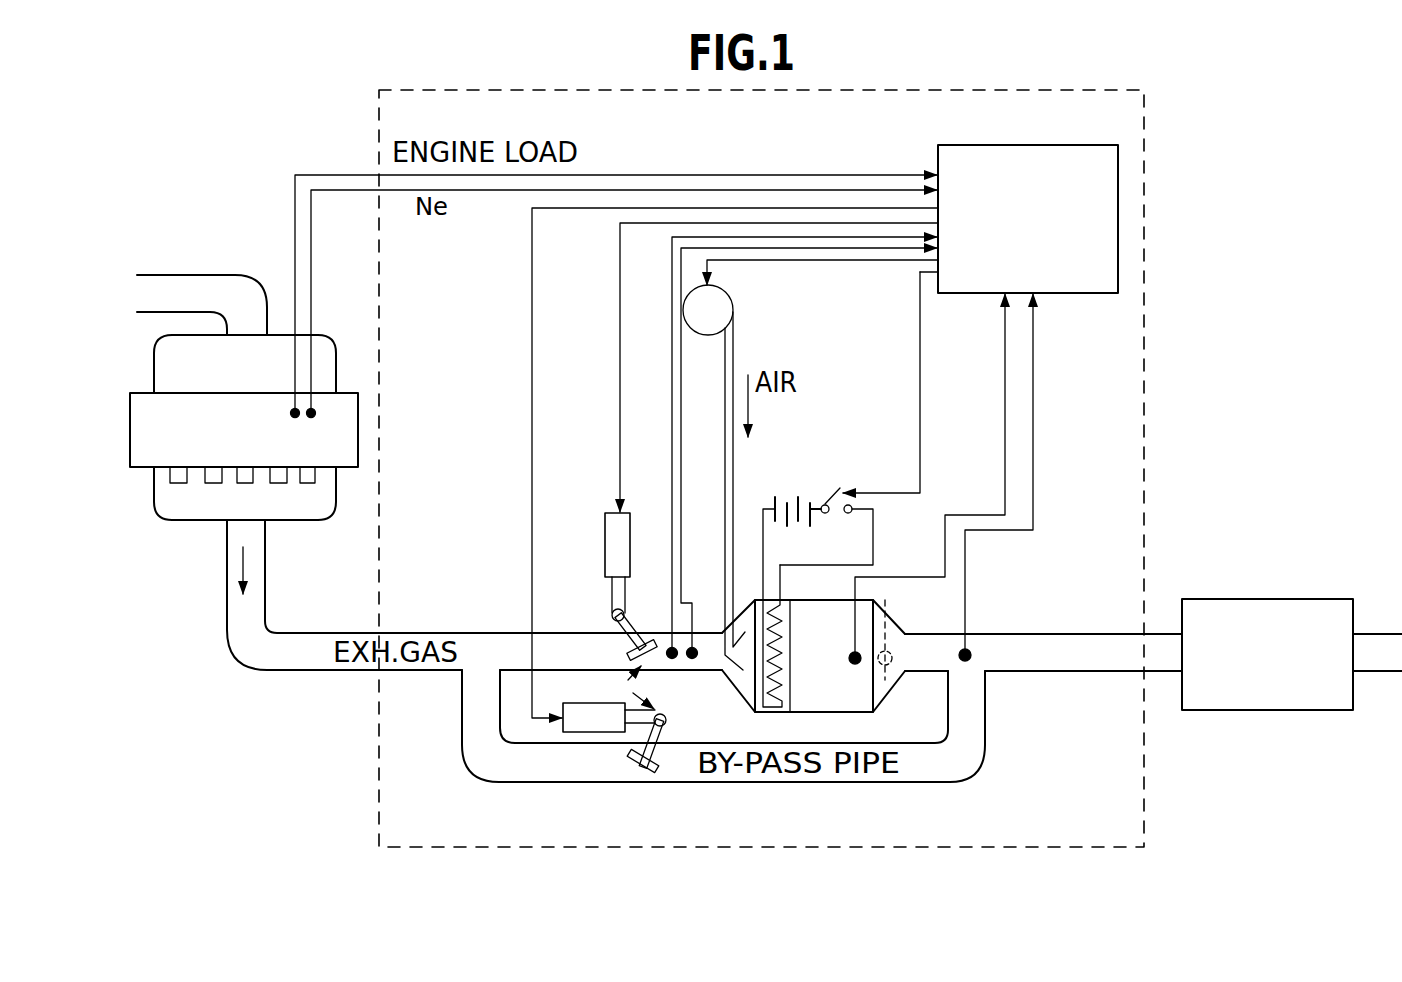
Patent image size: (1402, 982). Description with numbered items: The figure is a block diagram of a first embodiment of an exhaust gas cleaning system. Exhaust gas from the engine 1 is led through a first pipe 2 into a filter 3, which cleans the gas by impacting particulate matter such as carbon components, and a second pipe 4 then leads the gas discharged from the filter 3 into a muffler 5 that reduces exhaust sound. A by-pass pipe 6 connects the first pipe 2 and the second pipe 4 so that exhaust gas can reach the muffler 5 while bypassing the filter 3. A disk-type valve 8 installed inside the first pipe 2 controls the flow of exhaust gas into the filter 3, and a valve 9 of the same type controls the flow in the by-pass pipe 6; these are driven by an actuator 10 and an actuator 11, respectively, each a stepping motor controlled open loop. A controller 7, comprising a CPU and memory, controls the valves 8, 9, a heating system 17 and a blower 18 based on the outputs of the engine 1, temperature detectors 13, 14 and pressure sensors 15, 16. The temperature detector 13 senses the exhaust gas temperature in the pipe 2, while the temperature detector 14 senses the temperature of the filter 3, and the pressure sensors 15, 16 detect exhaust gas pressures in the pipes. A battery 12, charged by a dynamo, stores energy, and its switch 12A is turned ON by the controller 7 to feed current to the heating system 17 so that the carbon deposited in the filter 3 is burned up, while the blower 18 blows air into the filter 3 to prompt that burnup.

The engine 1 is at (330, 336).
The first pipe 2 is at (467, 633).
The filter 3 is at (793, 600).
The second pipe 4 is at (1077, 635).
The muffler 5 is at (1275, 599).
The by-pass pipe 6 is at (775, 783).
The controller 7 is at (1085, 295).
The valve 8 is at (640, 640).
The valve 9 is at (648, 770).
The actuator 10 is at (631, 513).
The actuator 11 is at (580, 703).
The battery 12 is at (788, 491).
The switch 12A is at (834, 489).
The temperature detector 13 is at (697, 653).
The temperature detector 14 is at (853, 656).
The pressure sensor 15 is at (690, 630).
The pressure sensor 16 is at (983, 653).
The heating system 17 is at (783, 708).
The blower 18 is at (733, 292).